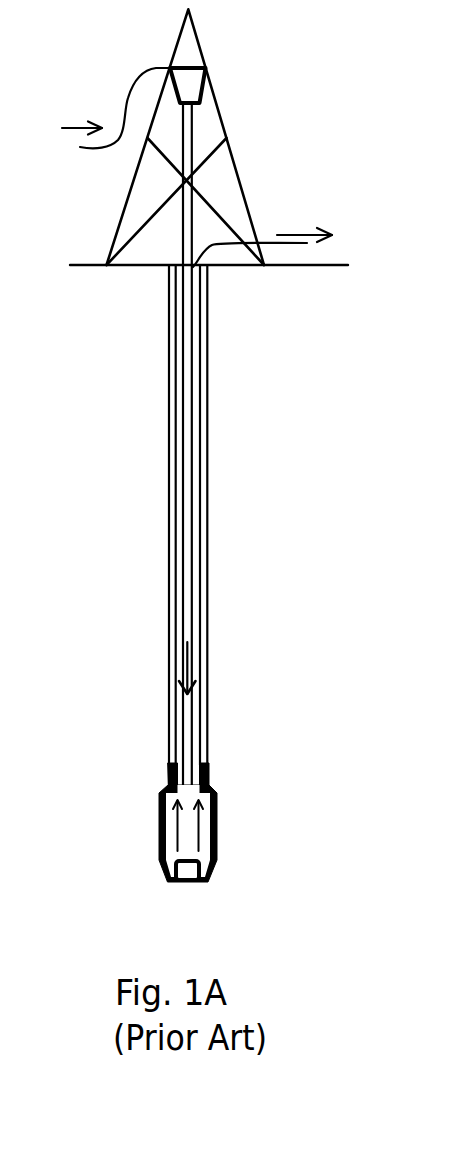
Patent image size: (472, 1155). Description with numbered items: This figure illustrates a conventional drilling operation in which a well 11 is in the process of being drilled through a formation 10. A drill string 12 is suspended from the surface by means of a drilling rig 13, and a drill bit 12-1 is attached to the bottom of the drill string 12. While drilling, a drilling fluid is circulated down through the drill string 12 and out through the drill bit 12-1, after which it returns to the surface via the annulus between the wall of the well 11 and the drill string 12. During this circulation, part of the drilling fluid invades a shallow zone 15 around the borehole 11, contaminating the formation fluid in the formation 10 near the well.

The formation 10 is at (276, 732).
The well 11 is at (208, 579).
The drill string 12 is at (184, 240).
The drill bit 12-1 is at (181, 876).
The drilling rig 13 is at (248, 100).
The shallow zone 15 is at (213, 815).